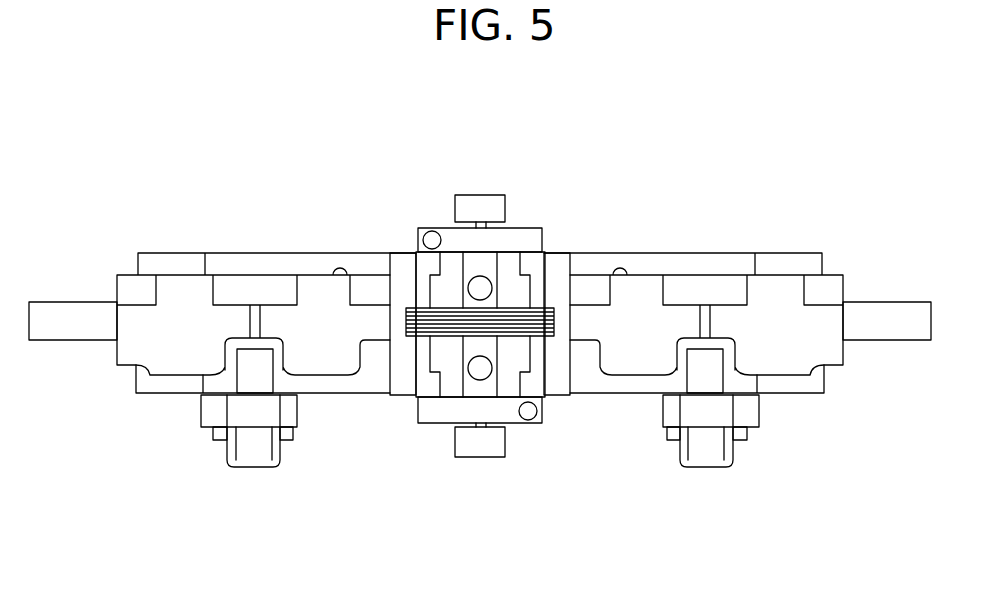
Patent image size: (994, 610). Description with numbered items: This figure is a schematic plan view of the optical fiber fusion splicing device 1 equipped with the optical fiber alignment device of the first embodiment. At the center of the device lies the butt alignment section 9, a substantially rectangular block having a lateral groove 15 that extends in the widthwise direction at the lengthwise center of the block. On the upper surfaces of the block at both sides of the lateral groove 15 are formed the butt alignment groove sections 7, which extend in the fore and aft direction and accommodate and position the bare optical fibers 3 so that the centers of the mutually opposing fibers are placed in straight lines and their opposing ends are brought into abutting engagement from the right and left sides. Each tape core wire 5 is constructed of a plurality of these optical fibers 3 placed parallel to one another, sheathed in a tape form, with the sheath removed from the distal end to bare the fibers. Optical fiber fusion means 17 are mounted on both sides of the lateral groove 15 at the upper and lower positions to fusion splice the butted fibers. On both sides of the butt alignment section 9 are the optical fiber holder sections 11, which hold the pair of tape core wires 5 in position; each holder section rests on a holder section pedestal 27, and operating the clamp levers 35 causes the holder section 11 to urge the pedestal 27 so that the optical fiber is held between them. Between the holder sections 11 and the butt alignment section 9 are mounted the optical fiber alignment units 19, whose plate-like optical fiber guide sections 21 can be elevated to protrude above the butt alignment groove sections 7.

The optical fiber fusion splicing device 1 is at (748, 241).
The bare optical fiber 3 is at (413, 297).
The tape core wire 5 is at (66, 308).
The butt alignment groove section 7 is at (445, 348).
The butt alignment section 9 is at (503, 262).
The optical fiber holder section 11 is at (323, 353).
The lateral groove 15 is at (462, 292).
The optical fiber fusion means 17 is at (478, 300).
The optical fiber alignment unit 19 is at (392, 401).
The optical fiber guide section 21 is at (408, 395).
The holder section pedestal 27 is at (155, 390).
The clamp lever 35 is at (208, 420).